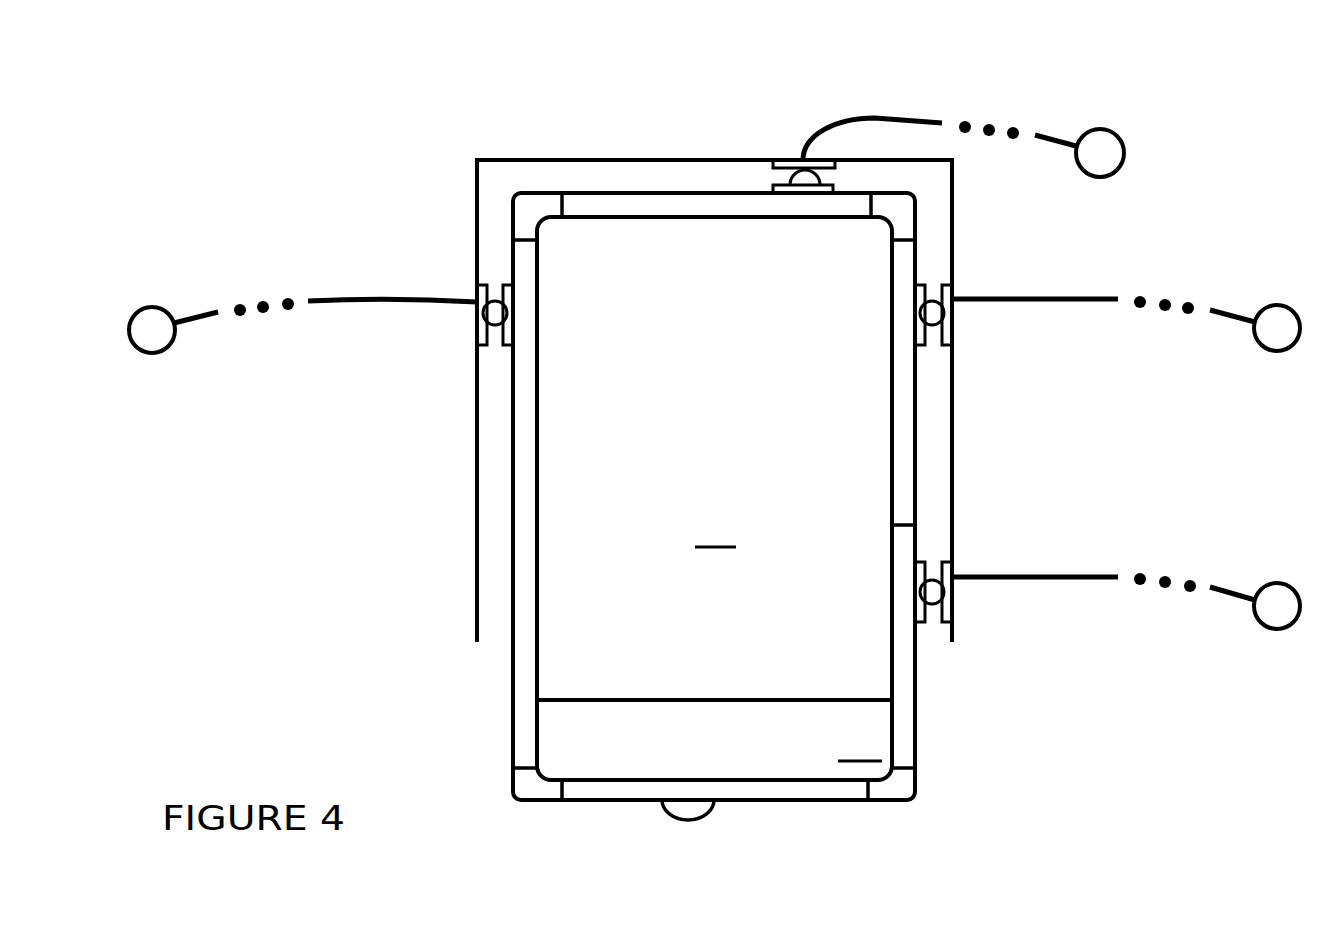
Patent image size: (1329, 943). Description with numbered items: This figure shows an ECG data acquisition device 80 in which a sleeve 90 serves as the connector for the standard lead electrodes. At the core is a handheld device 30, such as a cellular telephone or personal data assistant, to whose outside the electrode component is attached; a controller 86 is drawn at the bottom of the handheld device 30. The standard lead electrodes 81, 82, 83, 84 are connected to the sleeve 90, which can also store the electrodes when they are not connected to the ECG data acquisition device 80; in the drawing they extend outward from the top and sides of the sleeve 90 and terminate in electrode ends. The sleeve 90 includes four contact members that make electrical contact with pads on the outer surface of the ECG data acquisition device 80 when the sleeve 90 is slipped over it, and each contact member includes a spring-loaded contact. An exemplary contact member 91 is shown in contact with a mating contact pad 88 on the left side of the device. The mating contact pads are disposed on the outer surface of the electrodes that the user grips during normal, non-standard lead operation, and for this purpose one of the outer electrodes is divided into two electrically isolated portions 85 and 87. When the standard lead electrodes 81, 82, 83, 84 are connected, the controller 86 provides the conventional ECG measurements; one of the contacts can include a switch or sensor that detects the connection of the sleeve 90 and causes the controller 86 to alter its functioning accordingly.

The ECG data acquisition device 80 is at (317, 145).
The standard lead electrode 81 is at (828, 124).
The standard lead electrode 82 is at (382, 300).
The standard lead electrode 83 is at (1027, 305).
The standard lead electrode 84 is at (1023, 580).
The electrically isolated portion of outer electrode 85 is at (902, 403).
The controller 86 is at (714, 731).
The electrically isolated portion of outer electrode 87 is at (906, 685).
The mating contact pad 88 is at (512, 305).
The sleeve 90 is at (630, 160).
The contact member 91 is at (483, 332).
The handheld device 30 is at (714, 498).